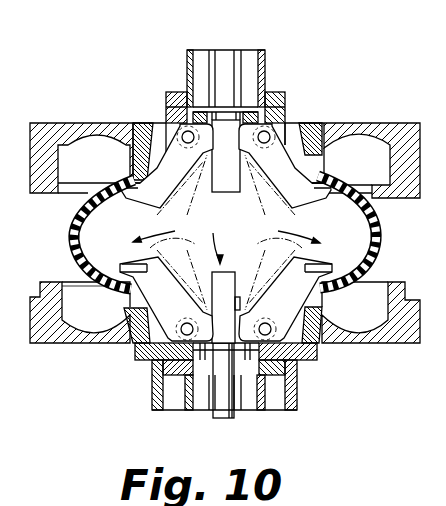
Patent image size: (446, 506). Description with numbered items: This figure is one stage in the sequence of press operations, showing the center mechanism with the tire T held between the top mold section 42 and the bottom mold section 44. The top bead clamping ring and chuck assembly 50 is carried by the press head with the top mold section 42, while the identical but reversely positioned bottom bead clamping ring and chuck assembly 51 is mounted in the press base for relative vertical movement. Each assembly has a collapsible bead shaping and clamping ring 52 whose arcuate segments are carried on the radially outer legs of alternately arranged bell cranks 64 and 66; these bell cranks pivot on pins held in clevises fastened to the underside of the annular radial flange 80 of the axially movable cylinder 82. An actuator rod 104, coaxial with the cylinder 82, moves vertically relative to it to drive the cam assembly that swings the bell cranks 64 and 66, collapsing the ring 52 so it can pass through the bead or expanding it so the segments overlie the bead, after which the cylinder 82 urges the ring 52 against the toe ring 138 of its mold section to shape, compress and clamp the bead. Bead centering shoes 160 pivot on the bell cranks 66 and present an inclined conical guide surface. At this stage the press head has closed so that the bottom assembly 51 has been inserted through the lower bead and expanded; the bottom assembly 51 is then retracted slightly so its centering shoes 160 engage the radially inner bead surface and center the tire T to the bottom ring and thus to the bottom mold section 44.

The top mold section 42 is at (78, 123).
The bottom mold section 44 is at (370, 344).
The toe ring 138 is at (151, 123).
The cylinder 82 is at (265, 70).
The annular radial flange 80 is at (273, 377).
The actuator rod 104 is at (216, 400).
The top bead clamping ring and chuck assembly 50 is at (227, 195).
The bottom bead clamping ring and chuck assembly 51 is at (226, 238).
The collapsible bead shaping and clamping ring 52 is at (322, 191).
The bell crank 64 is at (273, 160).
The bell crank 66 is at (172, 166).
The bead centering shoe 160 is at (140, 293).
The tire T is at (379, 247).